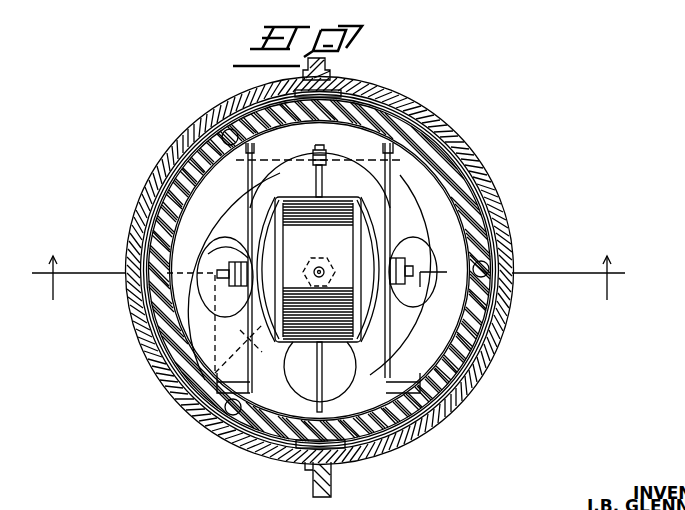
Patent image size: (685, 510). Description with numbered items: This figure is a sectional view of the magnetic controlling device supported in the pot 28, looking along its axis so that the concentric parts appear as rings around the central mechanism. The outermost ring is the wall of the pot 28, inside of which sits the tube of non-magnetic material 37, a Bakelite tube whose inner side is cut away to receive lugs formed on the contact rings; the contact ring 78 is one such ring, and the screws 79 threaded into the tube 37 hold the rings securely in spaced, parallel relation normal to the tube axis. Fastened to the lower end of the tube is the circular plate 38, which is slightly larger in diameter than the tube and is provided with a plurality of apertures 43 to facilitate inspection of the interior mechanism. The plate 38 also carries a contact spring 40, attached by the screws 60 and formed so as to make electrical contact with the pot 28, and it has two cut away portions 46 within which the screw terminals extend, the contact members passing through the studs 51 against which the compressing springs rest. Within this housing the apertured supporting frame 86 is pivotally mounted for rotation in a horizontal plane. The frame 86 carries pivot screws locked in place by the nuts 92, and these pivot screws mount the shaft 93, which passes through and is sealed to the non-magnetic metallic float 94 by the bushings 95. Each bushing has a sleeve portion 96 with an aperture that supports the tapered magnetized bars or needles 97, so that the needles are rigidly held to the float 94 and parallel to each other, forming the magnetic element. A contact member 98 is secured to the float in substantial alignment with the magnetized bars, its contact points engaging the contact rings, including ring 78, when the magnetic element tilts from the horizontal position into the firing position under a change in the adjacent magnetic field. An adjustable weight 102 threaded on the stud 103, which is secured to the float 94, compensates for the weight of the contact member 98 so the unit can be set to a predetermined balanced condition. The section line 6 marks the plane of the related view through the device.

The pot 28 is at (497, 197).
The tube of non-magnetic material 37 is at (171, 182).
The apertures 43 is at (406, 118).
The contact ring 78 is at (446, 318).
The circular plate 38 is at (206, 330).
The cut away portions 46 is at (332, 72).
The studs 51 is at (362, 86).
The screws 79 is at (228, 128).
The section line 6 is at (325, 278).
The apertured supporting frame 86 is at (428, 314).
The non-magnetic metallic float 94 is at (250, 214).
The tapered magnetized bars or needles 97 is at (232, 400).
The stud 103 is at (398, 204).
The shaft 93 is at (258, 236).
The nuts 92 is at (228, 247).
The bushings 95 is at (425, 250).
The sleeve portion 96 is at (372, 252).
The adjustable weight 102 is at (328, 156).
The contact spring 40 is at (248, 286).
The screws 60 is at (320, 372).
The contact member 98 is at (326, 392).